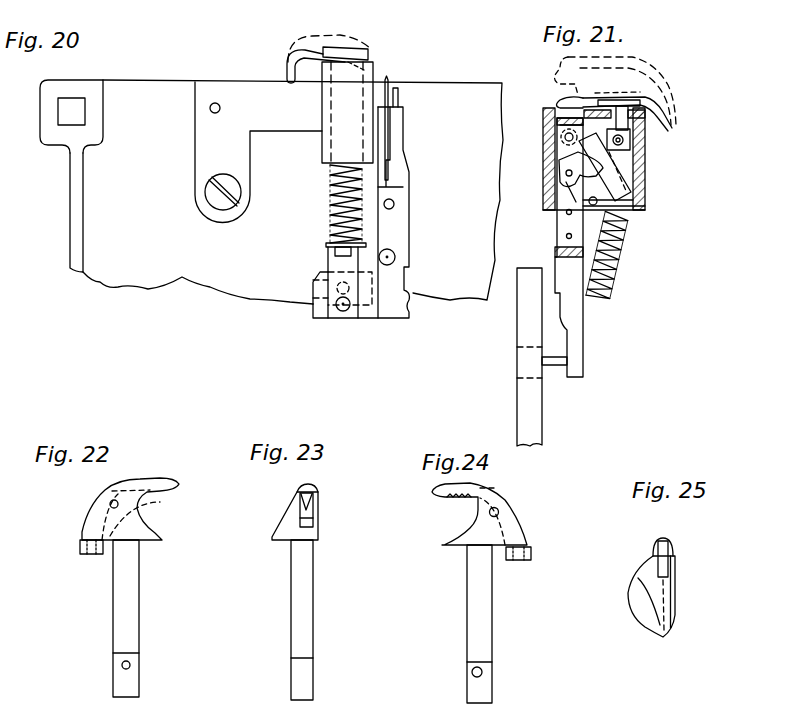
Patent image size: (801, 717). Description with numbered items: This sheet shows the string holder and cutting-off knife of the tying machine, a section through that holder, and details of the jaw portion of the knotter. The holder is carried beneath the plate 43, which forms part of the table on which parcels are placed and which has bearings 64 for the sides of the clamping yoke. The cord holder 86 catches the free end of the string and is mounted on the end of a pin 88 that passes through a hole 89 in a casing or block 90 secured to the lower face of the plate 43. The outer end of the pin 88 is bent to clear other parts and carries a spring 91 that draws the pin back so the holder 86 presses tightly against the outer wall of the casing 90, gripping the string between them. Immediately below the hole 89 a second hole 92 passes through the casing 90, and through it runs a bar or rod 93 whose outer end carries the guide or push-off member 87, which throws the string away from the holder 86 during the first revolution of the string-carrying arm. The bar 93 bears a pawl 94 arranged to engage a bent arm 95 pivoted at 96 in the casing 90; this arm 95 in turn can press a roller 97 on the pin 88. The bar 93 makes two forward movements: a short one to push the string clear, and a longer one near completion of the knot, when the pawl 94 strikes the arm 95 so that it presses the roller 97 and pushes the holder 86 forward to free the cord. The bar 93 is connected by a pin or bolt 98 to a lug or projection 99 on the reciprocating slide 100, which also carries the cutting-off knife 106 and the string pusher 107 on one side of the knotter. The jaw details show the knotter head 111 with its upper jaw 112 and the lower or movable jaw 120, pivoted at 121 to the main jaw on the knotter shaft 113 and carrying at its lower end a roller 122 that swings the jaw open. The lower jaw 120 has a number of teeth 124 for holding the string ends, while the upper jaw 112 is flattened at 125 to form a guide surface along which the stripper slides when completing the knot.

In FIG. 20, the plate 43 is at (286, 192).
In FIG. 20, the bearings 64 is at (68, 128).
In FIG. 20, the cord holder 86 is at (368, 55).
In FIG. 21, the cord holder 86 is at (608, 100).
In FIG. 20, the guide or push-off member 87 is at (287, 66).
In FIG. 21, the guide or push-off member 87 is at (680, 126).
In FIG. 20, the pin 88 is at (366, 66).
In FIG. 21, the pin 88 is at (629, 136).
In FIG. 21, the hole 89 is at (646, 193).
In FIG. 20, the casing or block 90 is at (320, 128).
In FIG. 21, the casing or block 90 is at (646, 208).
In FIG. 20, the spring 91 is at (330, 228).
In FIG. 21, the spring 91 is at (626, 258).
In FIG. 21, the second hole 92 is at (548, 108).
In FIG. 20, the bar or rod 93 is at (328, 260).
In FIG. 21, the bar or rod 93 is at (556, 228).
In FIG. 21, the pawl 94 is at (543, 186).
In FIG. 21, the bent arm 95 is at (631, 163).
In FIG. 21, the pivot 96 is at (590, 206).
In FIG. 21, the roller 97 is at (631, 146).
In FIG. 20, the pin or bolt 98 is at (343, 309).
In FIG. 21, the pin or bolt 98 is at (555, 367).
In FIG. 20, the lug or projection 99 is at (320, 312).
In FIG. 21, the lug or projection 99 is at (535, 383).
In FIG. 20, the reciprocating bar or slide 100 is at (396, 318).
In FIG. 21, the reciprocating bar or slide 100 is at (535, 432).
In FIG. 20, the cutting-off knife 106 is at (388, 80).
In FIG. 20, the string pusher 107 is at (399, 95).
In FIG. 22, the head 111 is at (165, 534).
In FIG. 23, the head 111 is at (319, 528).
In FIG. 24, the head 111 is at (493, 514).
In FIG. 25, the head 111 is at (670, 587).
In FIG. 22, the upper jaw 112 is at (170, 486).
In FIG. 23, the upper jaw 112 is at (283, 533).
In FIG. 24, the upper jaw 112 is at (485, 485).
In FIG. 25, the upper jaw 112 is at (650, 612).
In FIG. 22, the shaft 113 is at (139, 633).
In FIG. 23, the shaft 113 is at (308, 620).
In FIG. 24, the shaft 113 is at (492, 618).
In FIG. 22, the lower or movable jaw 120 is at (172, 504).
In FIG. 23, the lower or movable jaw 120 is at (308, 512).
In FIG. 24, the lower or movable jaw 120 is at (503, 546).
In FIG. 25, the lower or movable jaw 120 is at (668, 560).
In FIG. 22, the pivot 121 is at (110, 504).
In FIG. 24, the pivot 121 is at (489, 513).
In FIG. 22, the roller 122 is at (82, 556).
In FIG. 24, the roller 122 is at (532, 556).
In FIG. 25, the roller 122 is at (672, 545).
In FIG. 22, the teeth 124 is at (140, 501).
In FIG. 24, the teeth 124 is at (468, 498).
In FIG. 23, the flattened portion 125 is at (313, 490).